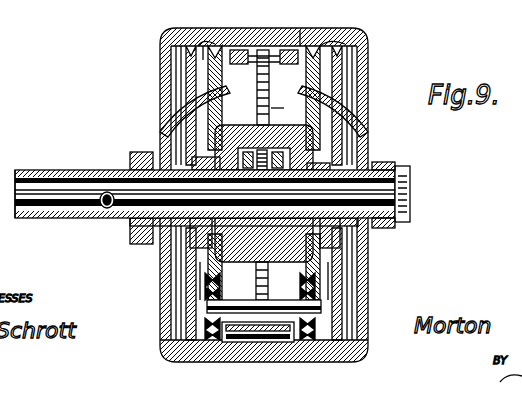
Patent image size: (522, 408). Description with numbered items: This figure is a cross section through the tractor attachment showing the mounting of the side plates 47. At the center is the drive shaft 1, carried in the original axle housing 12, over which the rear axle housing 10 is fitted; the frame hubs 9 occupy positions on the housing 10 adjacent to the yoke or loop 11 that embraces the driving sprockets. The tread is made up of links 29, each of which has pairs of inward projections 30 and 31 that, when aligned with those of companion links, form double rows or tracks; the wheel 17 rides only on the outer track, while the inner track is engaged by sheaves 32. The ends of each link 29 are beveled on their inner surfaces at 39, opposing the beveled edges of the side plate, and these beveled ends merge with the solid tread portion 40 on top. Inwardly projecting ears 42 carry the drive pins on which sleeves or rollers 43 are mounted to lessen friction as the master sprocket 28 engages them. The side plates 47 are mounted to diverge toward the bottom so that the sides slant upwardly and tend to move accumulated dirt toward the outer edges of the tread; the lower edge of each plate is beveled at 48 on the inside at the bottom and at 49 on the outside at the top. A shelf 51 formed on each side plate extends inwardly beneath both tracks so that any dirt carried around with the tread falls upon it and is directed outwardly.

The drive shaft 1 is at (15, 196).
The hub 9 is at (244, 193).
The rear axle housing 10 is at (66, 172).
The yoke or loop 11 is at (282, 115).
The original axle housing 12 is at (92, 172).
The wheel 17 is at (200, 86).
The master sprocket 28 is at (252, 87).
The link 29 is at (165, 30).
The inward projection 30 is at (203, 40).
The inward projection 31 is at (338, 40).
The sheave 32 is at (150, 292).
The beveled end surface 39 is at (168, 48).
The tread portion 40 is at (238, 40).
The ear 42 is at (258, 352).
The sleeve or roller 43 is at (246, 72).
The side plate 47 is at (180, 262).
The inside bottom bevel 48 is at (160, 342).
The outside top bevel 49 is at (187, 66).
The shelf 51 is at (172, 128).